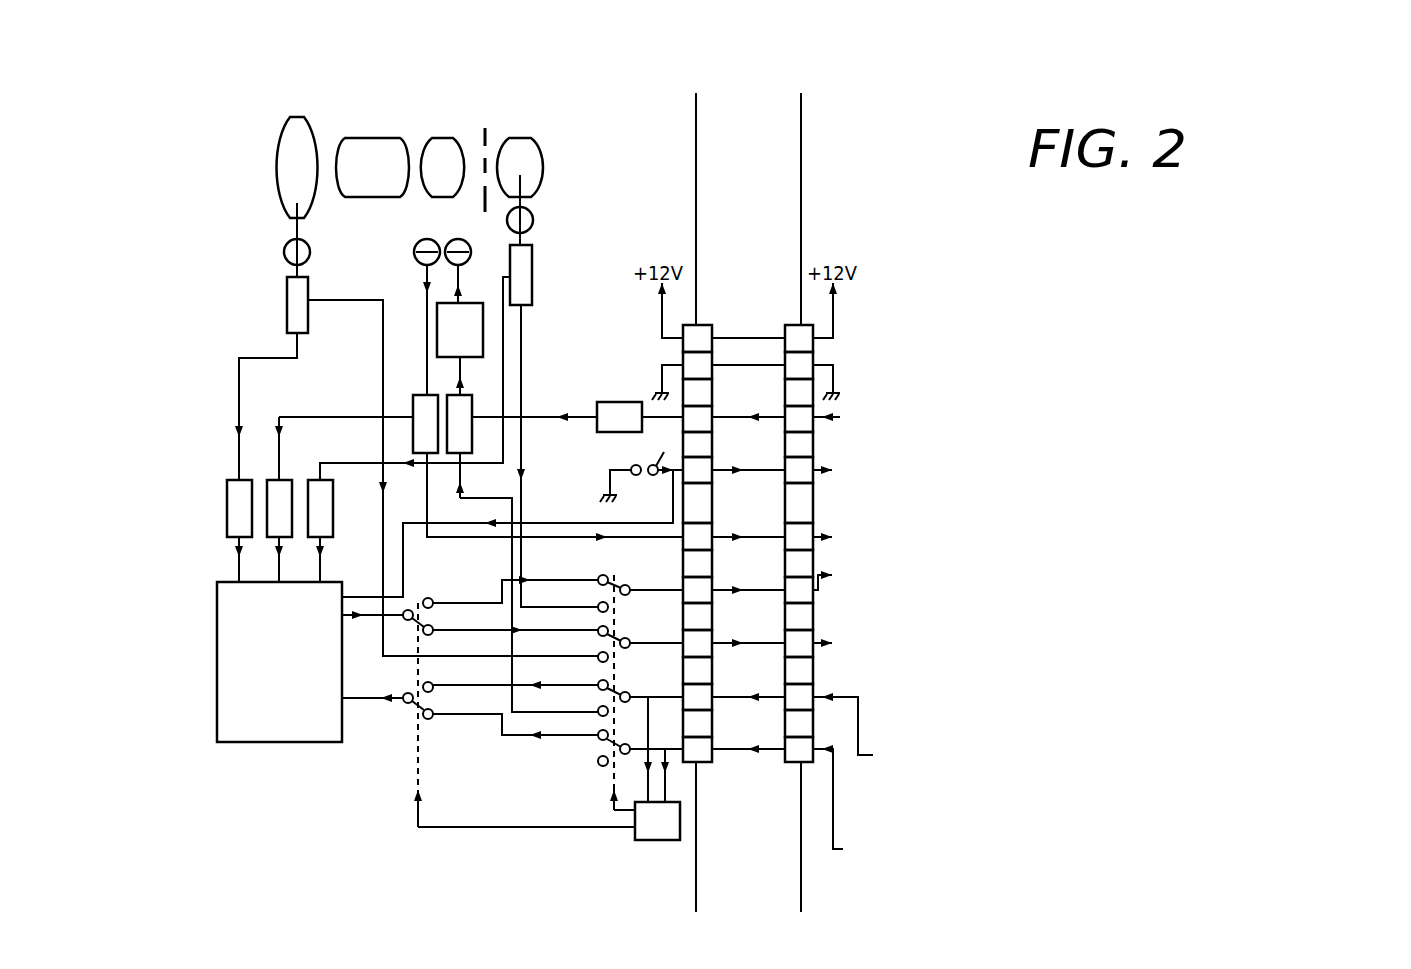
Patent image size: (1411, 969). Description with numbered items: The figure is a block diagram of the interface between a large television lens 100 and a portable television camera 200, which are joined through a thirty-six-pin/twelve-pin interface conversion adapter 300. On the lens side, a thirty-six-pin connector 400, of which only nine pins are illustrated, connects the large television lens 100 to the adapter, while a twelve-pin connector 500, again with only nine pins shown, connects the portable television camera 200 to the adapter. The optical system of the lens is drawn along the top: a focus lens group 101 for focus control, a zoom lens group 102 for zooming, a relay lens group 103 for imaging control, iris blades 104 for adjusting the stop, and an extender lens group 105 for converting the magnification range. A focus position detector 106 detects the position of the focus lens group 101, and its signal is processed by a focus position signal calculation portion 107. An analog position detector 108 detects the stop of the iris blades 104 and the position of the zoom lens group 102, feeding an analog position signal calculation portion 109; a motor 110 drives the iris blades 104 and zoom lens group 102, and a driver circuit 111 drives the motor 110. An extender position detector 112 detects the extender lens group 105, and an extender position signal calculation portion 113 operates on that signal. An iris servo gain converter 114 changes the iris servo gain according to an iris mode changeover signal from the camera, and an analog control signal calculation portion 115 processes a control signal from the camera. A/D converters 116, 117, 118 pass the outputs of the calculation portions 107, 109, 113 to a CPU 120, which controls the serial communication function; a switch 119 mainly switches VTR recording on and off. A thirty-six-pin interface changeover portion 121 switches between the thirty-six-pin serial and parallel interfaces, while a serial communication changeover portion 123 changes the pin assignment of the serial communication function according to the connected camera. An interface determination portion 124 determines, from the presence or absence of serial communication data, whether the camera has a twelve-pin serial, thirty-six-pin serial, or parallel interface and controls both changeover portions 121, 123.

The focus lens group 101 is at (290, 124).
The zoom lens group 102 is at (380, 140).
The relay lens group 103 is at (440, 140).
The iris blades 104 is at (486, 127).
The extender lens group 105 is at (525, 140).
The focus position detector 106 is at (284, 252).
The focus position signal calculation portion 107 is at (287, 290).
The analog position detector 108 is at (414, 252).
The analog position signal calculation portion 109 is at (420, 395).
The motor 110 is at (458, 239).
The driver circuit 111 is at (478, 303).
The extender position detector 112 is at (533, 222).
The extender position signal calculation portion 113 is at (532, 270).
The iris servo gain converter 114 is at (468, 395).
The analog control signal calculation portion 115 is at (617, 402).
The A/D converter 116 is at (227, 508).
The A/D converter 117 is at (270, 480).
The A/D converter 118 is at (333, 508).
The switch 119 is at (643, 477).
The CPU 120 is at (283, 742).
The 36-pin interface changeover portion 121 is at (600, 768).
The serial communication changeover portion 123 is at (433, 719).
The interface determination portion 124 is at (650, 841).
The 36-pin connector 400 is at (702, 325).
The 12-pin connector 500 is at (790, 325).
The large television lens 100 is at (553, 511).
The portable television camera 200 is at (1093, 514).
The 36-pin/12-pin interface conversion adapter 300 is at (748, 633).